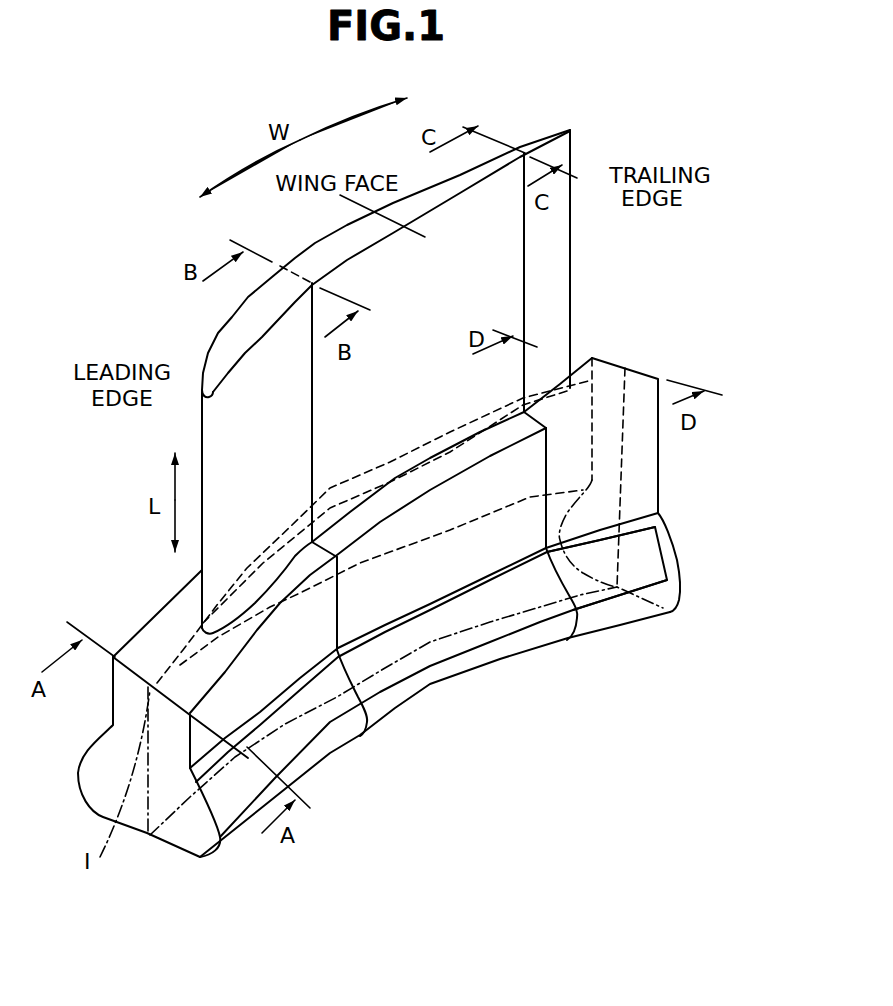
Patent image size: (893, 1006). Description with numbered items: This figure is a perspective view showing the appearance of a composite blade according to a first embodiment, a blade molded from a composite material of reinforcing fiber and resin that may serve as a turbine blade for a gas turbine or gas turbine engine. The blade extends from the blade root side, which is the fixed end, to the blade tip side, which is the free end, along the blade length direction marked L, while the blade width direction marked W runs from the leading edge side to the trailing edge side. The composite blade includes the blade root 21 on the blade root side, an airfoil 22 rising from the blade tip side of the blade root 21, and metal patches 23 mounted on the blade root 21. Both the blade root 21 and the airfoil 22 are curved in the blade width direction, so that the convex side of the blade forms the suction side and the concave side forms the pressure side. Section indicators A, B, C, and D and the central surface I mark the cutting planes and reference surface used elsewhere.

The blade root 21 is at (665, 527).
The airfoil 22 is at (572, 247).
The metal patches 23 is at (680, 563).